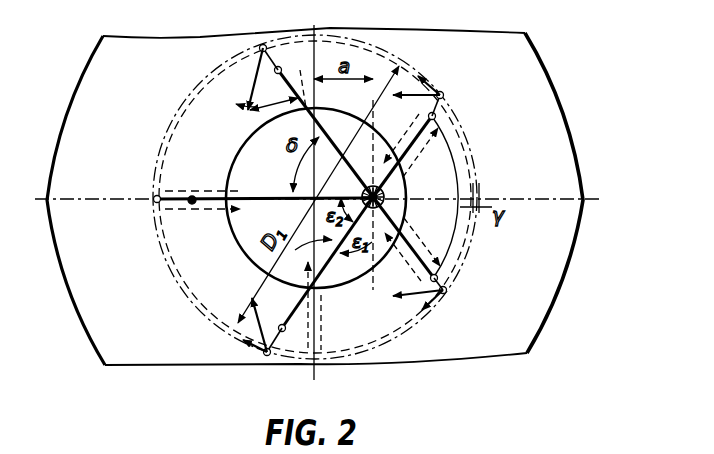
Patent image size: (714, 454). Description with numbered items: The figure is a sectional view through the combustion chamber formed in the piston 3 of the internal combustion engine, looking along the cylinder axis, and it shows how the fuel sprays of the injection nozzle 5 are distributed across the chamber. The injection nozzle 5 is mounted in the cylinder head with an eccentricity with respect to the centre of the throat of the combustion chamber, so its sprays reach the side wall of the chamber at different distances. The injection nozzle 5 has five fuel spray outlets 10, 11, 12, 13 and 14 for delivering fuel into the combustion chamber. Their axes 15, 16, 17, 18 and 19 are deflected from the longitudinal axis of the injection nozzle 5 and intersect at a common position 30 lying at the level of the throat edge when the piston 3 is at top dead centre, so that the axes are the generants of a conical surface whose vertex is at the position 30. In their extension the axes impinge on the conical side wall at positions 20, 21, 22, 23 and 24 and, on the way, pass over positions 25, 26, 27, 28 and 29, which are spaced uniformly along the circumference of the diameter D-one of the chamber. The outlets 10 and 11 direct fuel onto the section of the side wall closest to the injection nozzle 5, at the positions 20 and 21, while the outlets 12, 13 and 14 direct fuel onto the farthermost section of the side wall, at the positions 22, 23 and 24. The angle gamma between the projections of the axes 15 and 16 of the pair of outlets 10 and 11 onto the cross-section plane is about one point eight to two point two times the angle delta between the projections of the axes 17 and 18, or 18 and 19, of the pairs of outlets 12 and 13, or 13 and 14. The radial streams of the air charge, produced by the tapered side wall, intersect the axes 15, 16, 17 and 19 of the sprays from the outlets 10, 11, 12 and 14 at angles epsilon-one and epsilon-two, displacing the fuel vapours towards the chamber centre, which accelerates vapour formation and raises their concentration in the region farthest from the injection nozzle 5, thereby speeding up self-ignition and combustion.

The piston 3 is at (558, 162).
The injection nozzle 5 is at (477, 183).
The fuel spray outlet 10 is at (402, 158).
The fuel spray outlet 11 is at (431, 278).
The fuel spray outlet 12 is at (404, 290).
The fuel spray outlet 13 is at (333, 194).
The fuel spray outlet 14 is at (351, 162).
The axis of outlet 15 is at (434, 132).
The axis of outlet 16 is at (459, 277).
The axis of outlet 17 is at (318, 290).
The axis of outlet 18 is at (236, 190).
The axis of outlet 19 is at (281, 68).
The impingement position 20 is at (436, 113).
The impingement position 21 is at (446, 292).
The impingement position 22 is at (284, 332).
The impingement position 23 is at (156, 197).
The impingement position 24 is at (266, 44).
The position on circumference of diameter D1 25 is at (441, 92).
The position on circumference of diameter D1 26 is at (430, 311).
The position on circumference of diameter D1 27 is at (264, 355).
The position on circumference of diameter D1 28 is at (157, 202).
The position on circumference of diameter D1 29 is at (261, 46).
The intersection position 30 is at (384, 204).